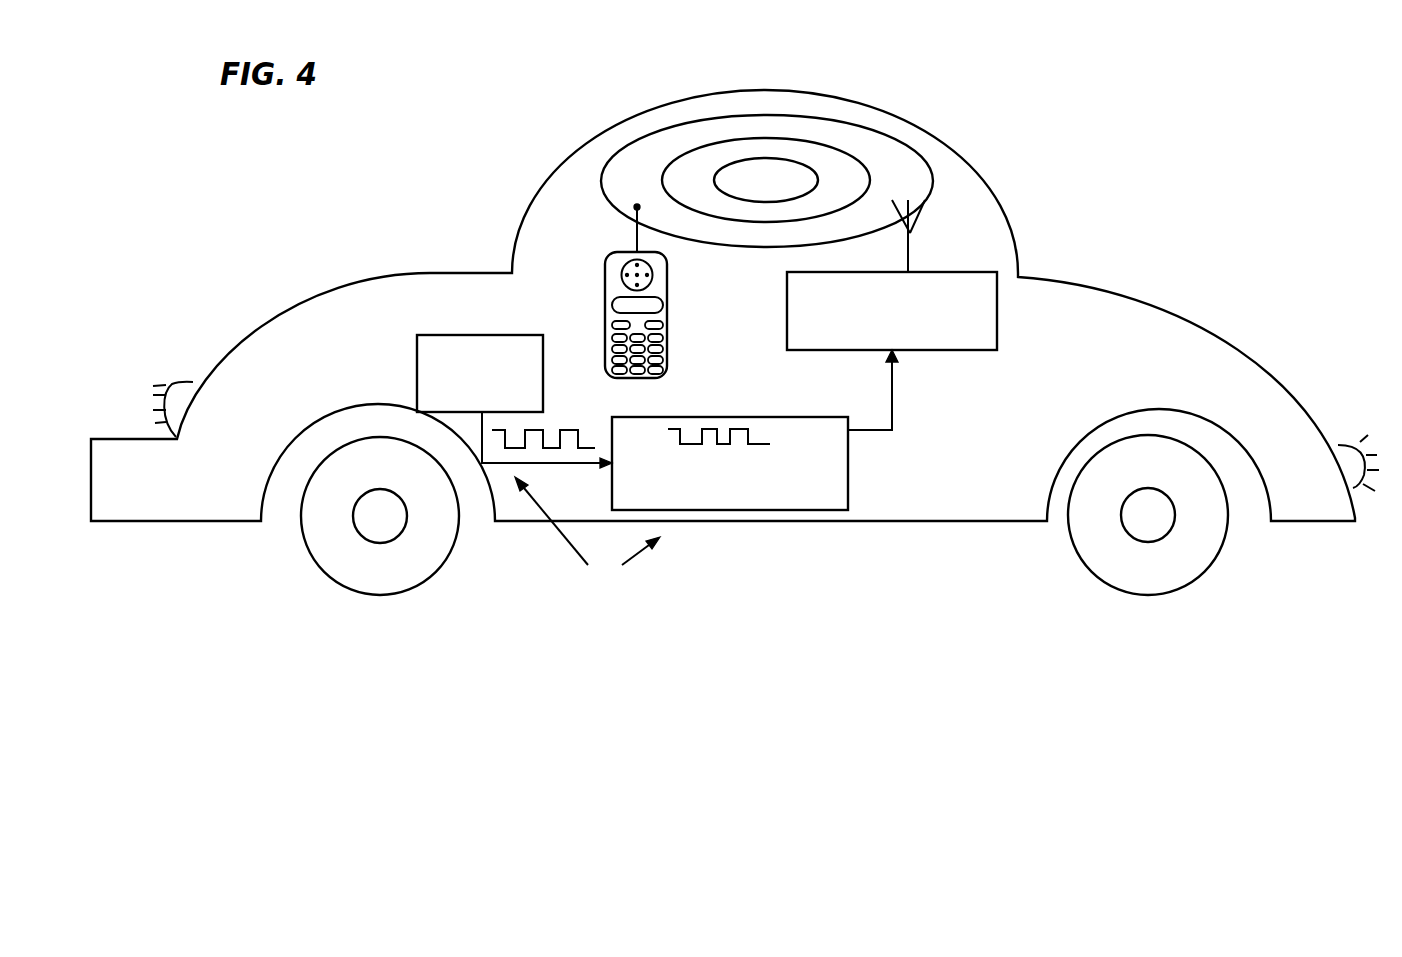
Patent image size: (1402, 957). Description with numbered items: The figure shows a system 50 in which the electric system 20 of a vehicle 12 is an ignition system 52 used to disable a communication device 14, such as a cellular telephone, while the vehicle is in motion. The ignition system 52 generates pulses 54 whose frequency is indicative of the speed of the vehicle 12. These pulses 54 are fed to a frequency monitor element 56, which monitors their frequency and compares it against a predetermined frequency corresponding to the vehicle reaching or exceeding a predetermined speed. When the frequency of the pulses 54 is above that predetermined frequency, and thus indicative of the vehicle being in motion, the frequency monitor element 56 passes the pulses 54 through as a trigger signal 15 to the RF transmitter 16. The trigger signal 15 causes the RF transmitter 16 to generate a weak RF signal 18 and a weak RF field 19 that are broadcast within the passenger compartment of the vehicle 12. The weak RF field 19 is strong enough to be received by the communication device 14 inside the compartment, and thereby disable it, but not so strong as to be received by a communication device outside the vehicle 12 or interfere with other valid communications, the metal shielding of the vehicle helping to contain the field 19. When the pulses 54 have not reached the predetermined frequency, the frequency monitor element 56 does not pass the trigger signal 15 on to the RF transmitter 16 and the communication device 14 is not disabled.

The vehicle 12 is at (1127, 317).
The communication device 14 is at (605, 365).
The trigger signal 15 is at (895, 402).
The RF transmitter 16 is at (997, 308).
The weak RF signal 18 is at (913, 243).
The weak RF field 19 is at (812, 128).
The electric system 20 is at (587, 531).
The system 50 is at (1068, 139).
The ignition system 52 is at (417, 397).
The pulses 54 is at (540, 463).
The frequency monitor element 56 is at (848, 500).